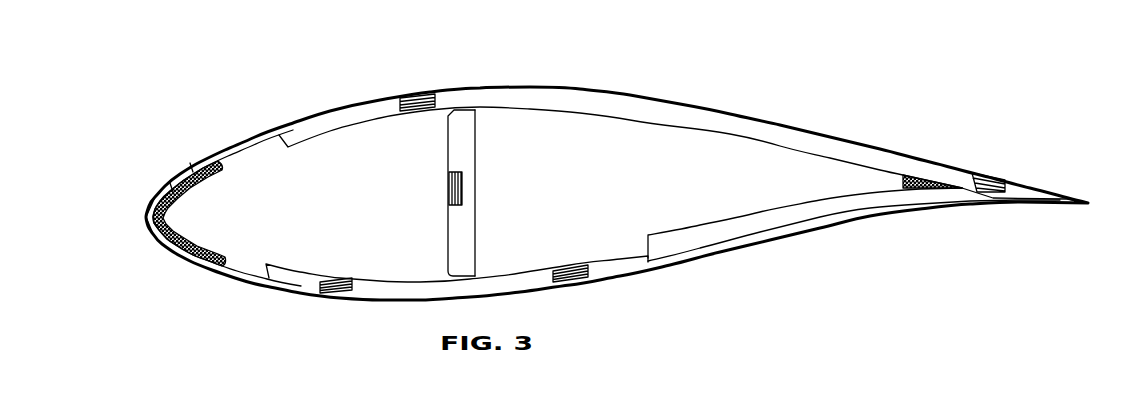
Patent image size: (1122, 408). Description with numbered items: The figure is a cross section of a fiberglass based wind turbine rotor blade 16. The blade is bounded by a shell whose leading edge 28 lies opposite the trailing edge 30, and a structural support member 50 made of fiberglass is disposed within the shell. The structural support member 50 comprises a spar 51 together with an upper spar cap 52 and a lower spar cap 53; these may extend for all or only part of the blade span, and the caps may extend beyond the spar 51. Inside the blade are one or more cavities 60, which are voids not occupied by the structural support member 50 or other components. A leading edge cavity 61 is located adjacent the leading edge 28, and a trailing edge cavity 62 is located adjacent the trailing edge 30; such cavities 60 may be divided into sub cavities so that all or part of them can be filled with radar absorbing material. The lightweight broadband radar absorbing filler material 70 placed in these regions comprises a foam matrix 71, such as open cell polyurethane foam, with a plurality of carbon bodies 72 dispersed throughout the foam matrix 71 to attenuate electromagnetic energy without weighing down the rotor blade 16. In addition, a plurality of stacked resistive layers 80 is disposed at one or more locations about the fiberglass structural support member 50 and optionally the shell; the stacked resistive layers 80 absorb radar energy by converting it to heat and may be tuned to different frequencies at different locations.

The wind turbine rotor blade 16 is at (816, 84).
The leading edge 28 is at (146, 216).
The trailing edge 30 is at (1089, 205).
The structural support member 50 is at (437, 163).
The spar 51 is at (477, 200).
The upper spar cap 52 is at (490, 108).
The lower spar cap 53 is at (540, 267).
The cavity 60 is at (266, 245).
The leading edge cavity 61 is at (192, 213).
The trailing edge cavity 62 is at (892, 188).
The lightweight broadband radar absorbing filler material 70 is at (227, 175).
The foam matrix 71 is at (192, 165).
The carbon bodies 72 is at (170, 185).
The plurality of stacked resistive layers 80 is at (343, 267).